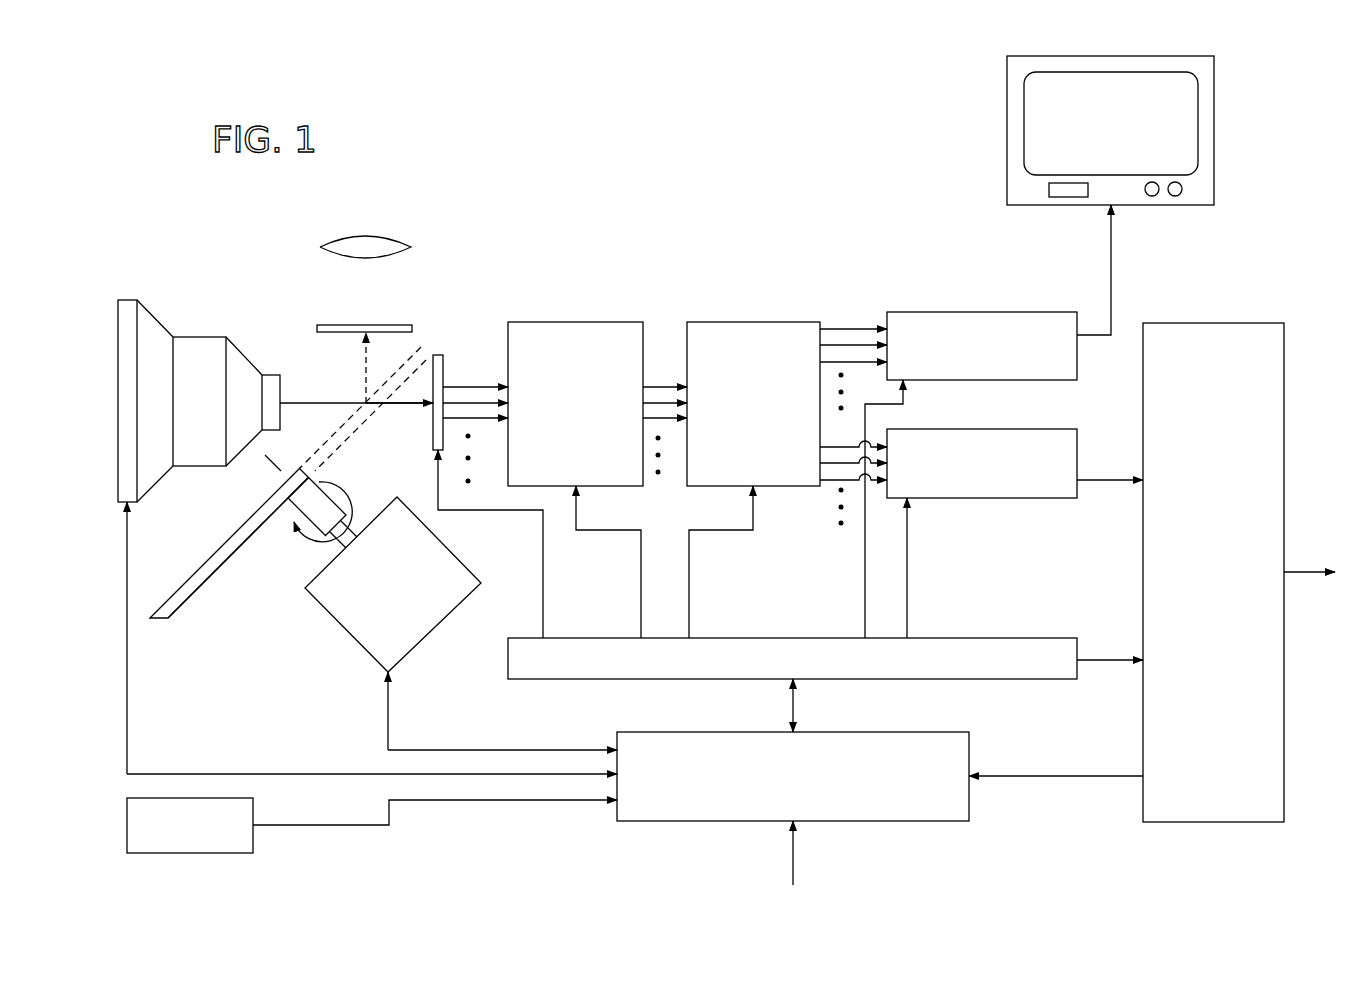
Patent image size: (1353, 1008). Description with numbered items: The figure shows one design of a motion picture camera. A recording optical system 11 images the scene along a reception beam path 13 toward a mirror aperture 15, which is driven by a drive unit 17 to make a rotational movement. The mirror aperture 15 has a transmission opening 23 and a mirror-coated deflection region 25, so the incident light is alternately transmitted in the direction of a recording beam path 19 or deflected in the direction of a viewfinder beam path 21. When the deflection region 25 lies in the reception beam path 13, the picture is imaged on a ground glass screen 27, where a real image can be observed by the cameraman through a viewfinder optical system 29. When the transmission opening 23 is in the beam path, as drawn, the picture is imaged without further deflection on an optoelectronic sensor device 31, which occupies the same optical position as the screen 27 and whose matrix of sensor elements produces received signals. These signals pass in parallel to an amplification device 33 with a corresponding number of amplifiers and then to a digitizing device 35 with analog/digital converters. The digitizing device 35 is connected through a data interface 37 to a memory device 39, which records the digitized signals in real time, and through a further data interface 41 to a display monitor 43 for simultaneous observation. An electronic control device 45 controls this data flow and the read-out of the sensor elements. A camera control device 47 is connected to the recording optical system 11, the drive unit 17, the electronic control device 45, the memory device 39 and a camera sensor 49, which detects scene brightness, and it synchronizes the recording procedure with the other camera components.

The recording optical system 11 is at (148, 300).
The reception beam path 13 is at (298, 402).
The mirror aperture 15 is at (190, 575).
The drive unit 17 is at (338, 612).
The recording beam path 19 is at (427, 410).
The viewfinder beam path 21 is at (361, 377).
The transmission opening 23 is at (423, 347).
The deflection region 25 is at (178, 603).
The ground glass screen 27 is at (327, 323).
The viewfinder optical system 29 is at (370, 244).
The optoelectronic sensor device 31 is at (440, 357).
The amplification device 33 is at (580, 335).
The digitizing device 35 is at (755, 332).
The data interface 37 is at (988, 495).
The memory device 39 is at (1226, 333).
The further data interface 41 is at (970, 322).
The display monitor 43 is at (1214, 140).
The electronic control device 45 is at (1024, 650).
The camera control device 47 is at (910, 814).
The camera sensor 49 is at (133, 830).